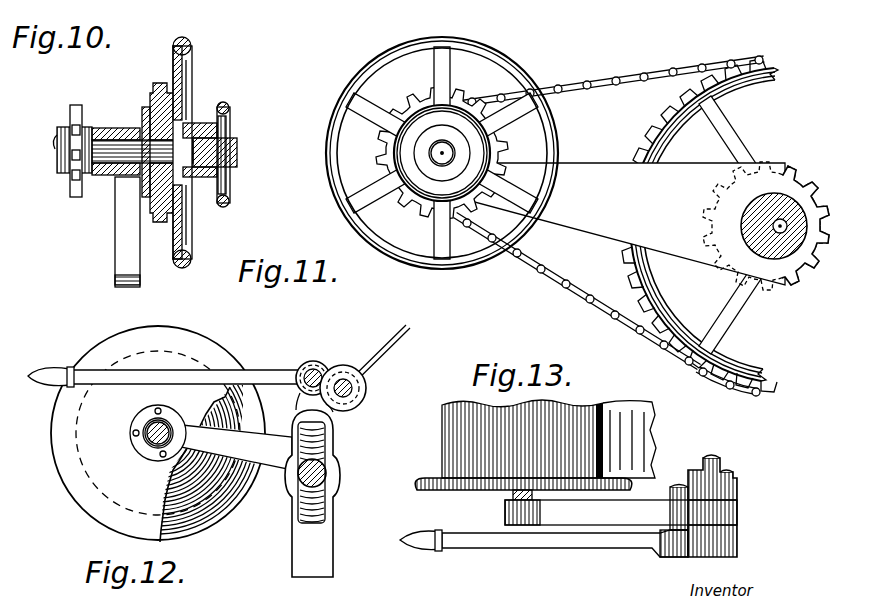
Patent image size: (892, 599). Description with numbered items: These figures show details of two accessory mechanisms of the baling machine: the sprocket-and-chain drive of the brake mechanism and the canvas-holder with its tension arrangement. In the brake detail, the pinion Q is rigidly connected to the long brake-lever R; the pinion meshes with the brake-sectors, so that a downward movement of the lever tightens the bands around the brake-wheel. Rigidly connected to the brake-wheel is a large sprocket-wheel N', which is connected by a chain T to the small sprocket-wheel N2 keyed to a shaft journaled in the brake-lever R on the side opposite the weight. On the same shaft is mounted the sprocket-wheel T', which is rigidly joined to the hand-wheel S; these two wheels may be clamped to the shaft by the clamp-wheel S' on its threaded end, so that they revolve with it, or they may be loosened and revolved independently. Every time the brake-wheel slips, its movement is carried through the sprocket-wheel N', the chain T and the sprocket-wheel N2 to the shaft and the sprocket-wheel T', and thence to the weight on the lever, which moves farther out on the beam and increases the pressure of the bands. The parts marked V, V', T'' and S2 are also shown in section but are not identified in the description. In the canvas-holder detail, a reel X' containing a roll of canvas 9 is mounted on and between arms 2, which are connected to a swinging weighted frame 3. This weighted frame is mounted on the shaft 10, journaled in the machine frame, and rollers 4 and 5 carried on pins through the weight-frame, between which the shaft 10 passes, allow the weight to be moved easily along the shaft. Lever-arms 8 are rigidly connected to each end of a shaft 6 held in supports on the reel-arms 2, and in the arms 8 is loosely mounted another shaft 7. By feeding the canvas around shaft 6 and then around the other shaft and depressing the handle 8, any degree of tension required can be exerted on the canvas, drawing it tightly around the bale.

In FIG. 10, the small sprocket-wheel N2 is at (75, 105).
In FIG. 10, the sleeve V' is at (121, 140).
In FIG. 10, the shaft V is at (177, 152).
In FIG. 11, the shaft V is at (462, 153).
In FIG. 10, the sprocket-wheel T' is at (163, 138).
In FIG. 11, the sprocket teeth T'' is at (443, 154).
In FIG. 11, the chain T is at (608, 226).
In FIG. 10, the hand-wheel S is at (198, 147).
In FIG. 11, the hand-wheel S is at (442, 150).
In FIG. 10, the clamp-wheel S' is at (241, 150).
In FIG. 11, the clamp-wheel S' is at (405, 142).
In FIG. 10, the hub S2 is at (197, 124).
In FIG. 10, the brake-lever R is at (124, 236).
In FIG. 11, the brake-lever R is at (626, 224).
In FIG. 11, the large sprocket-wheel N' is at (692, 225).
In FIG. 11, the pinion Q is at (797, 162).
In FIG. 12, the reel X' is at (158, 433).
In FIG. 13, the reel X' is at (523, 498).
In FIG. 12, the roll of canvas 9 is at (197, 507).
In FIG. 13, the roll of canvas 9 is at (549, 439).
In FIG. 12, the lever-arms 8 is at (211, 371).
In FIG. 13, the lever-arms 8 is at (565, 541).
In FIG. 12, the arms 2 is at (211, 437).
In FIG. 13, the arms 2 is at (621, 507).
In FIG. 12, the swinging weighted frame 3 is at (312, 485).
In FIG. 13, the swinging weighted frame 3 is at (739, 487).
In FIG. 12, the roller 4 is at (320, 504).
In FIG. 12, the roller 5 is at (318, 442).
In FIG. 12, the shaft 10 is at (326, 470).
In FIG. 13, the shaft 10 is at (714, 456).
In FIG. 12, the shaft 7 is at (306, 364).
In FIG. 13, the shaft 7 is at (682, 484).
In FIG. 12, the shaft 6 is at (350, 388).
In FIG. 13, the shaft 6 is at (730, 471).